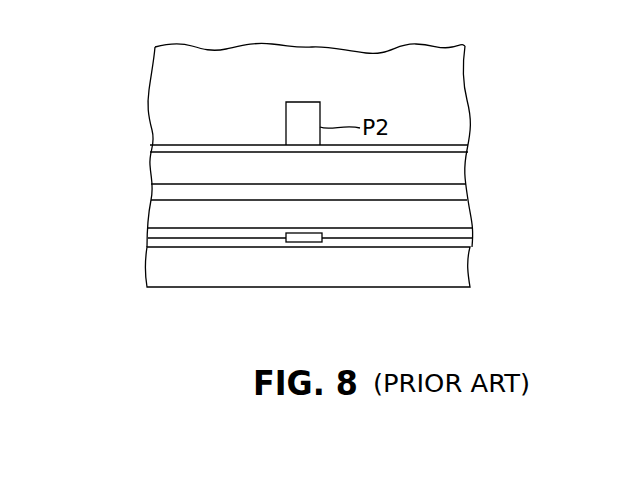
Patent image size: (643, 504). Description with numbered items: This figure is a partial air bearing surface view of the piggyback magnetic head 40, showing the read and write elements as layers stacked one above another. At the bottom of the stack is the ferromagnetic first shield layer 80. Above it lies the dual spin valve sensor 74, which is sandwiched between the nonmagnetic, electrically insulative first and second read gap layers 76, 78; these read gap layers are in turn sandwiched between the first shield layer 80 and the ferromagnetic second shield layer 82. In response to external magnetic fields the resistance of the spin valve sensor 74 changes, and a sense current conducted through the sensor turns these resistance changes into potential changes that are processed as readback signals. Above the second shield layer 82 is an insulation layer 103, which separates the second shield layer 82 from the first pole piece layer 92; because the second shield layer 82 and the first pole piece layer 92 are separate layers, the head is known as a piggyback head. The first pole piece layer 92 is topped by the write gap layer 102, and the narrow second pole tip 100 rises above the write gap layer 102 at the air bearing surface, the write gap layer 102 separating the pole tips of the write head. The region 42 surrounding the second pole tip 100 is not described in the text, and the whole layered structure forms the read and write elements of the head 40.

The piggyback magnetic head 40 is at (496, 56).
The overcoat layer 42 is at (157, 75).
The first pole piece layer 92 is at (160, 167).
The second shield layer 82 is at (158, 218).
The first shield layer 80 is at (458, 267).
The insulation layer 103 is at (458, 192).
The write gap layer 102 is at (221, 146).
The second pole tip 100 is at (299, 108).
The dual spin valve sensor 74 is at (302, 242).
The first read gap layer 76 is at (207, 247).
The second read gap layer 78 is at (428, 233).